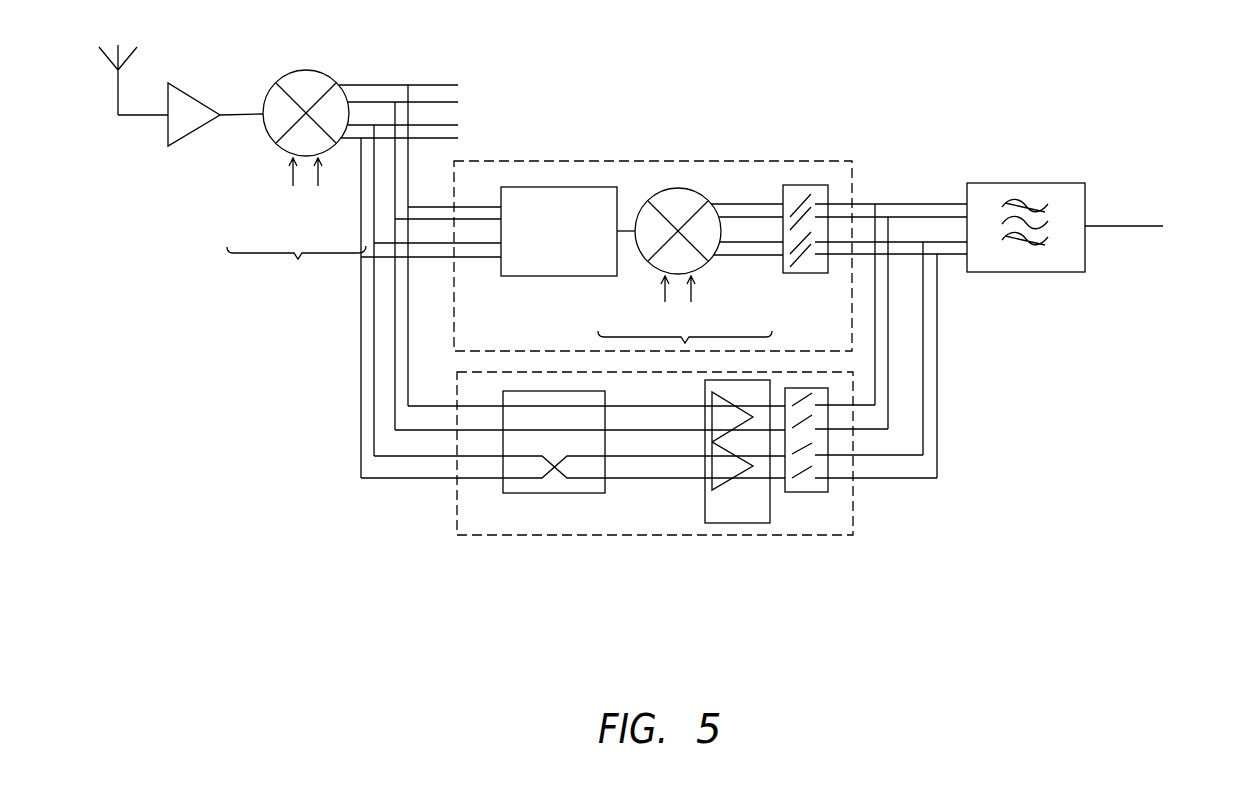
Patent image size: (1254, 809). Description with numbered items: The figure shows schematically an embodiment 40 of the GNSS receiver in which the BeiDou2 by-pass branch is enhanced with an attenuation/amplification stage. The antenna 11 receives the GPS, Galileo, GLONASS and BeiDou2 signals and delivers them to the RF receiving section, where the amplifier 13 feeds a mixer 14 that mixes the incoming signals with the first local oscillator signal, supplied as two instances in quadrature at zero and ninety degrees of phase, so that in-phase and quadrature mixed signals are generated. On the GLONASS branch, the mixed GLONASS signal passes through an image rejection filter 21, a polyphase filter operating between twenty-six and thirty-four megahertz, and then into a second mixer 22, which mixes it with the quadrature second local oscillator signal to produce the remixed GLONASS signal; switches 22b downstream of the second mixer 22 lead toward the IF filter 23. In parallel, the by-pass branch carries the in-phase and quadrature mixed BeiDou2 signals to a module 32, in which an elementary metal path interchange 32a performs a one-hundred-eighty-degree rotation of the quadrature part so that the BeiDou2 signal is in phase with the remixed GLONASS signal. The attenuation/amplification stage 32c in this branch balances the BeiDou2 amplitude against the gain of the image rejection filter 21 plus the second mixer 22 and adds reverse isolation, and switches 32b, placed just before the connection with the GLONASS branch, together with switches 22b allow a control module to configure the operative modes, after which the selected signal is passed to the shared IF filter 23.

The antenna 11 is at (127, 80).
The amplifier 13 is at (181, 128).
The mixer 14 is at (292, 92).
The image rejection filter 21 is at (573, 190).
The second mixer 22 is at (678, 190).
The switches 22b is at (810, 185).
The IF filter 23 is at (1060, 190).
The module 32 is at (528, 537).
The metal path interchange 32a is at (588, 488).
The switches 32b is at (814, 483).
The attenuation/amplification stage 32c is at (740, 525).
The receiver embodiment 40 is at (1160, 134).